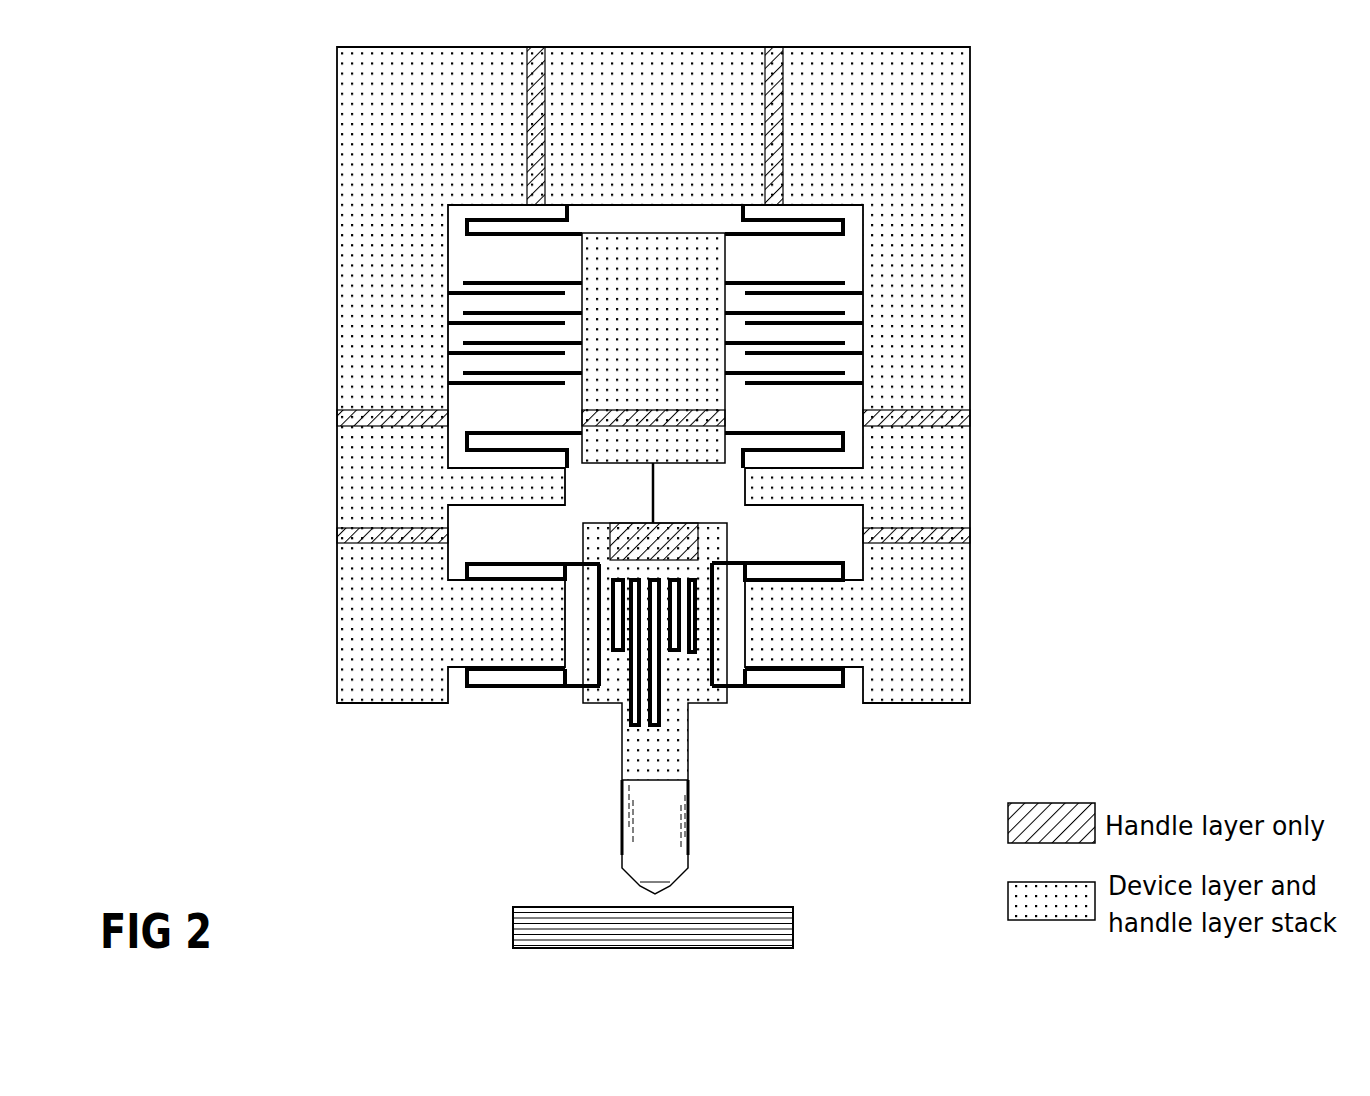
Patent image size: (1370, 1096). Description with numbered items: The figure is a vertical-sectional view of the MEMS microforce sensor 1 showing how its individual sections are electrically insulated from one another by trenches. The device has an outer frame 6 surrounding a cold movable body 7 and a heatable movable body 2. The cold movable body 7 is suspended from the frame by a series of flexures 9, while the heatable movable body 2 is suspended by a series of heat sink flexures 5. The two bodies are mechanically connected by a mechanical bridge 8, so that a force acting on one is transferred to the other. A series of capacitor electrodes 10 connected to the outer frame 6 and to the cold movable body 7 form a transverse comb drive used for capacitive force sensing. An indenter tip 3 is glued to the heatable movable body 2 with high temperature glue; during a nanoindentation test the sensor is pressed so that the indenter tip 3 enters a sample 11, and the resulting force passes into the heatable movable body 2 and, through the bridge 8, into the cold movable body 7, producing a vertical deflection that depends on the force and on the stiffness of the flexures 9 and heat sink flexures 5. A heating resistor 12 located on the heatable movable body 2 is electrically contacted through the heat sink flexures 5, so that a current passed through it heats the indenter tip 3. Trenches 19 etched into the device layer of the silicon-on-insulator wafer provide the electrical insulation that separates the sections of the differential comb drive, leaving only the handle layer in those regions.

The MEMS microforce sensor 1 is at (210, 880).
The heatable movable body 2 is at (660, 765).
The indenter tip 3 is at (657, 850).
The heat sink flexures 5 is at (538, 673).
The outer frame 6 is at (905, 140).
The cold movable body 7 is at (690, 290).
The mechanical bridge 8 is at (650, 497).
The flexures 9 is at (575, 232).
The capacitor electrodes 10 is at (740, 372).
The sample 11 is at (555, 918).
The heating resistor 12 is at (625, 718).
The trenches 19 is at (540, 72).